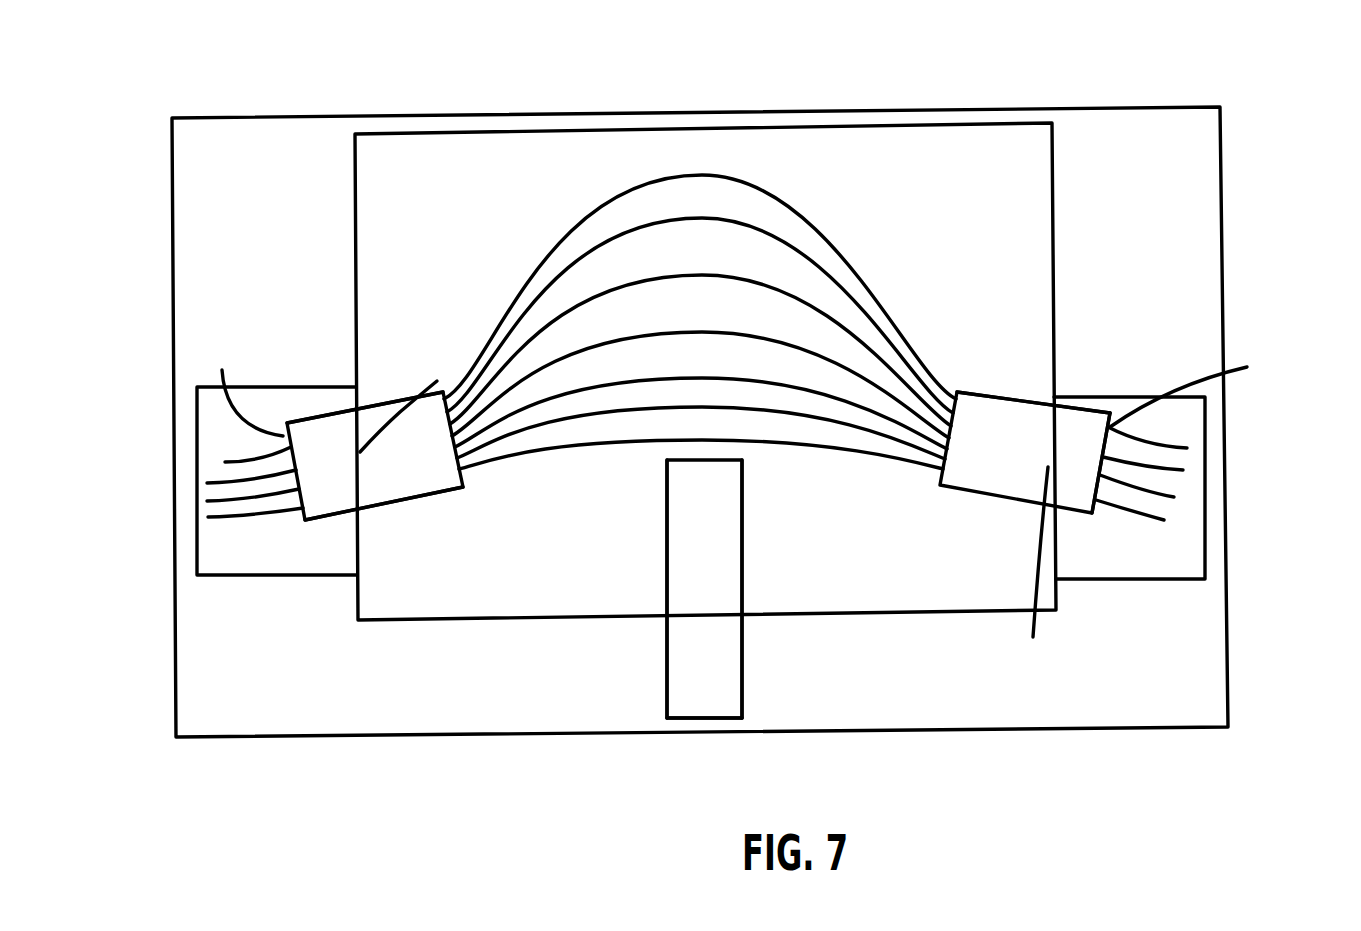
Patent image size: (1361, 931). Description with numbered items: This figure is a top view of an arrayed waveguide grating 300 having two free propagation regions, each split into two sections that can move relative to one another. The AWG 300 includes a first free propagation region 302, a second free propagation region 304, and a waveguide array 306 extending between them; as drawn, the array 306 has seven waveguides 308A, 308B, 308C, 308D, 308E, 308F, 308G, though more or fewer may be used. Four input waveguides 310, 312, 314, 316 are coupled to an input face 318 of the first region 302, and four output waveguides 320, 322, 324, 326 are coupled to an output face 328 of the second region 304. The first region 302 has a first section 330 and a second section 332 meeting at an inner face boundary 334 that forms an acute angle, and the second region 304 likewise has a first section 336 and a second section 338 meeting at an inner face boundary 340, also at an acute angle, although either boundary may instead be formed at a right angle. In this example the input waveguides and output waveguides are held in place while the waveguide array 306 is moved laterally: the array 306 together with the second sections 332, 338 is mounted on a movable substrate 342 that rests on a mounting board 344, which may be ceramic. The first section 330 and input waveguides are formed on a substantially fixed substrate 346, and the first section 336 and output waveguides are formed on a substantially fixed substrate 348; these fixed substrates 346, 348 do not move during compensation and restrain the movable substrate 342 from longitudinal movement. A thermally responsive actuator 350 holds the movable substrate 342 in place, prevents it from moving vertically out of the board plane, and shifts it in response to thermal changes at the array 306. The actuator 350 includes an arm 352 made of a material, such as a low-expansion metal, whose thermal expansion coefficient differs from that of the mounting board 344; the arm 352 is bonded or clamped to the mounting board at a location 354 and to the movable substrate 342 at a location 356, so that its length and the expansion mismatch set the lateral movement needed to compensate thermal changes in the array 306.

The arrayed waveguide grating 300 is at (344, 73).
The first free propagation region 302 is at (368, 393).
The second free propagation region 304 is at (1020, 523).
The waveguide array 306 is at (851, 252).
The waveguide 308A is at (547, 267).
The waveguide 308B is at (612, 248).
The waveguide 308C is at (562, 342).
The waveguide 308D is at (817, 360).
The waveguide 308E is at (822, 405).
The waveguide 308F is at (537, 452).
The waveguide 308G is at (499, 480).
The input waveguide 310 is at (225, 462).
The input waveguide 312 is at (207, 483).
The input waveguide 314 is at (207, 501).
The input waveguide 316 is at (208, 517).
The input face 318 is at (242, 385).
The output waveguide 320 is at (1187, 448).
The output waveguide 322 is at (1183, 470).
The output waveguide 324 is at (1174, 497).
The output waveguide 326 is at (1164, 520).
The output face 328 is at (1203, 387).
The first section 330 is at (305, 419).
The second section 332 is at (408, 504).
The inner face boundary 334 is at (419, 398).
The first section 336 is at (1086, 410).
The second section 338 is at (975, 392).
The inner face boundary 340 is at (1033, 568).
The movable substrate 342 is at (962, 181).
The mounting board 344 is at (1208, 690).
The substantially fixed substrate 346 is at (240, 571).
The substantially fixed substrate 348 is at (1087, 567).
The thermally responsive actuator 350 is at (765, 671).
The arm 352 is at (680, 622).
The mounting location 354 is at (697, 706).
The mounting location 356 is at (705, 520).